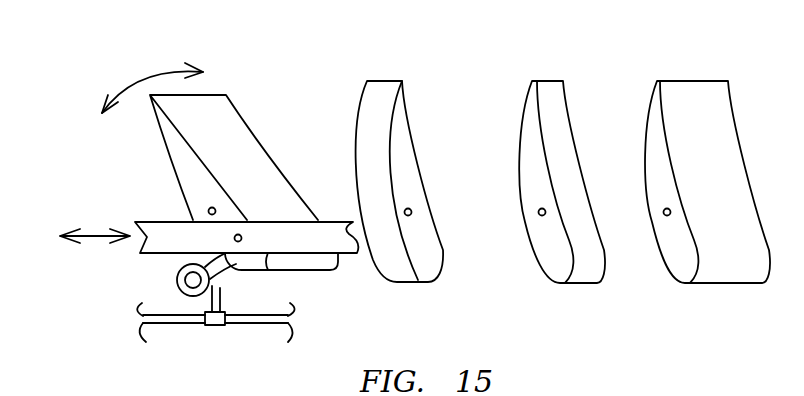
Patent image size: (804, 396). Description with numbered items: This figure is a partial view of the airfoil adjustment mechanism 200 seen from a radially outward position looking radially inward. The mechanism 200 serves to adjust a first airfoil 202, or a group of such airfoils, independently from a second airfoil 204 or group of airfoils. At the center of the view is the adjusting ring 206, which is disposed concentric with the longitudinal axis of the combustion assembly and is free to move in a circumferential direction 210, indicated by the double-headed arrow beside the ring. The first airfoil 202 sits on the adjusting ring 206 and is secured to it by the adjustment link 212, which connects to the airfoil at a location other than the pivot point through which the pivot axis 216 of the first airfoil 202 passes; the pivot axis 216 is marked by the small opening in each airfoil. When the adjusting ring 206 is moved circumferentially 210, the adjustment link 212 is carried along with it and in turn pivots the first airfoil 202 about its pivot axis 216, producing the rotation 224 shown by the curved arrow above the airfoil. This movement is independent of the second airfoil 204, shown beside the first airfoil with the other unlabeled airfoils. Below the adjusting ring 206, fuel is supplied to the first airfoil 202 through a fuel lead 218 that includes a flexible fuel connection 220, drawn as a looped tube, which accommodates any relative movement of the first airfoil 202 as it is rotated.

The mechanism 200 is at (303, 278).
The first airfoil 202 is at (249, 125).
The second airfoil 204 is at (412, 157).
The adjusting ring 206 is at (163, 222).
The circumferential direction 210 is at (88, 232).
The adjustment link 212 is at (241, 235).
The pivot axis 216 is at (209, 208).
The fuel lead 218 is at (175, 325).
The flexible fuel connection 220 is at (177, 280).
The rotation 224 is at (145, 77).